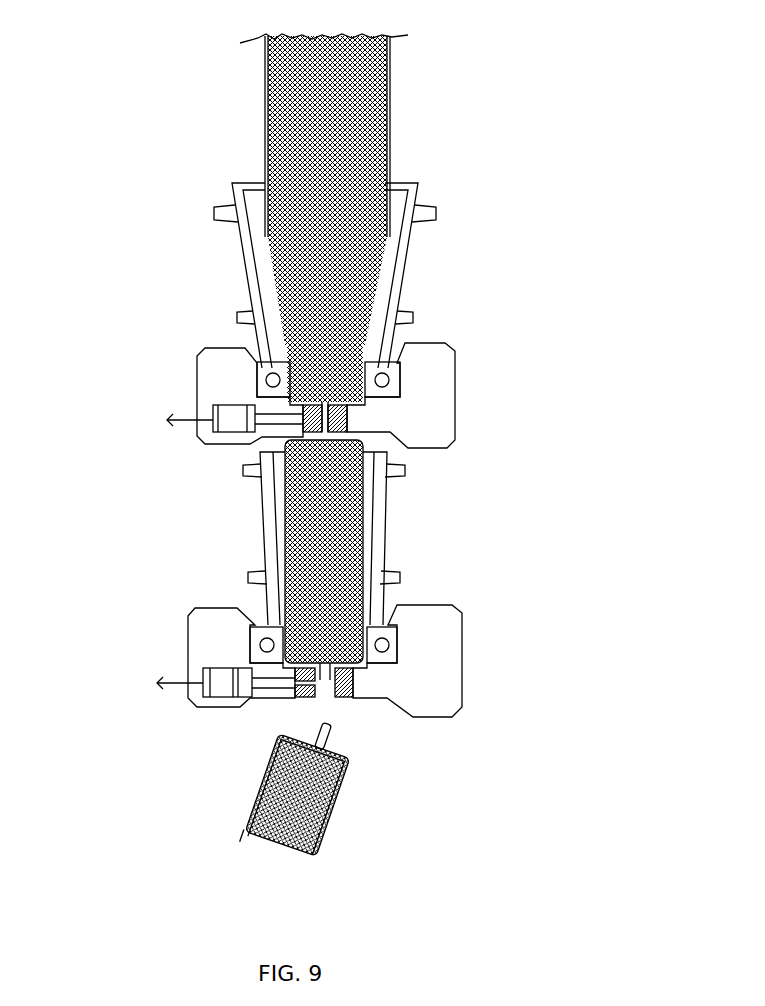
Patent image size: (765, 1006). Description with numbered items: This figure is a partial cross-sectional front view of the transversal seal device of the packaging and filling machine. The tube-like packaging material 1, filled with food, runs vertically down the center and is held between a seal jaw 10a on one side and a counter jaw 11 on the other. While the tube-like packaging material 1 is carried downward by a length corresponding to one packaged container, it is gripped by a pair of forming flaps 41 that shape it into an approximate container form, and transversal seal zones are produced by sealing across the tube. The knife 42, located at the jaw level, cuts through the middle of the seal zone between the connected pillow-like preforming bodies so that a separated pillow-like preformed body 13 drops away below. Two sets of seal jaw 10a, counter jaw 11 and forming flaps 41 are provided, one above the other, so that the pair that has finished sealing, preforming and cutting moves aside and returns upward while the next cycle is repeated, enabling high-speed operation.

The tube-like packaging material 1 is at (263, 120).
The forming flap 41 is at (237, 242).
The counter jaw 11 is at (233, 392).
The seal jaw 10a is at (397, 413).
The knife 42 is at (293, 685).
The pillow-like preformed body 13 is at (340, 797).